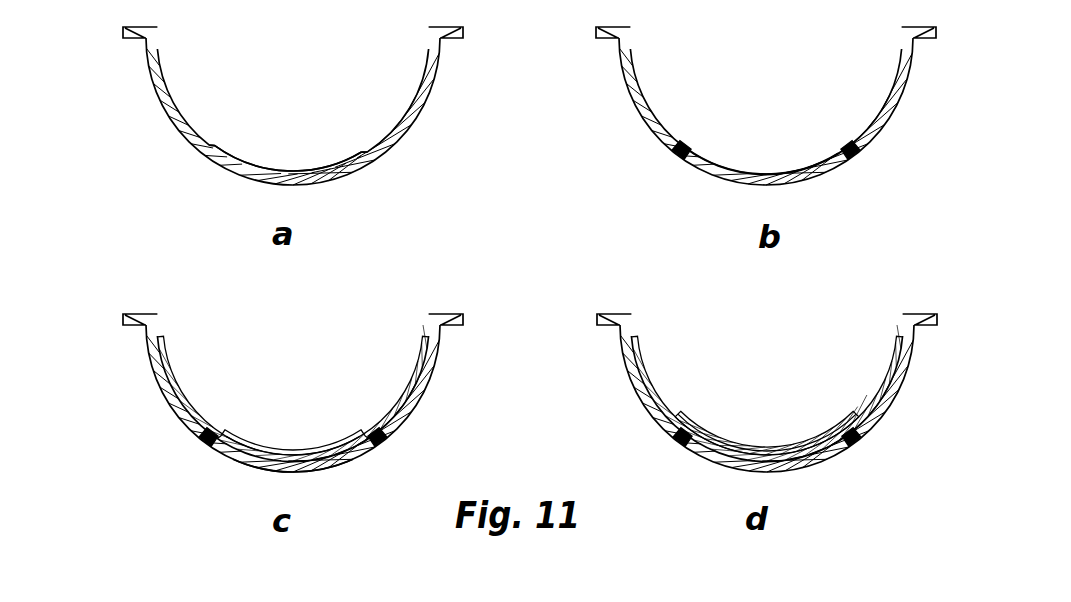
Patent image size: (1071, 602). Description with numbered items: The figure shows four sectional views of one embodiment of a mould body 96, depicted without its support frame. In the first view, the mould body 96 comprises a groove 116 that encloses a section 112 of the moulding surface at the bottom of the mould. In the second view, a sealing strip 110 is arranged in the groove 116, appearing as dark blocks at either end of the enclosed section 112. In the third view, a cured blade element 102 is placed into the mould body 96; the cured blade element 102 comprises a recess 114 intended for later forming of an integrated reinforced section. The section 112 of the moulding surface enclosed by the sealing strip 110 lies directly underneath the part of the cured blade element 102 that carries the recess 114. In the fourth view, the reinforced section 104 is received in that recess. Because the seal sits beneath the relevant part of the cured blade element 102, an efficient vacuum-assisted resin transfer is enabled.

The mould body 96 is at (514, 249).
The cured blade element 102 is at (530, 393).
The reinforced section 104 is at (771, 421).
The sealing strip 110 is at (524, 300).
The section of the moulding surface 112 is at (526, 316).
The recess 114 is at (293, 423).
The groove 116 is at (288, 119).